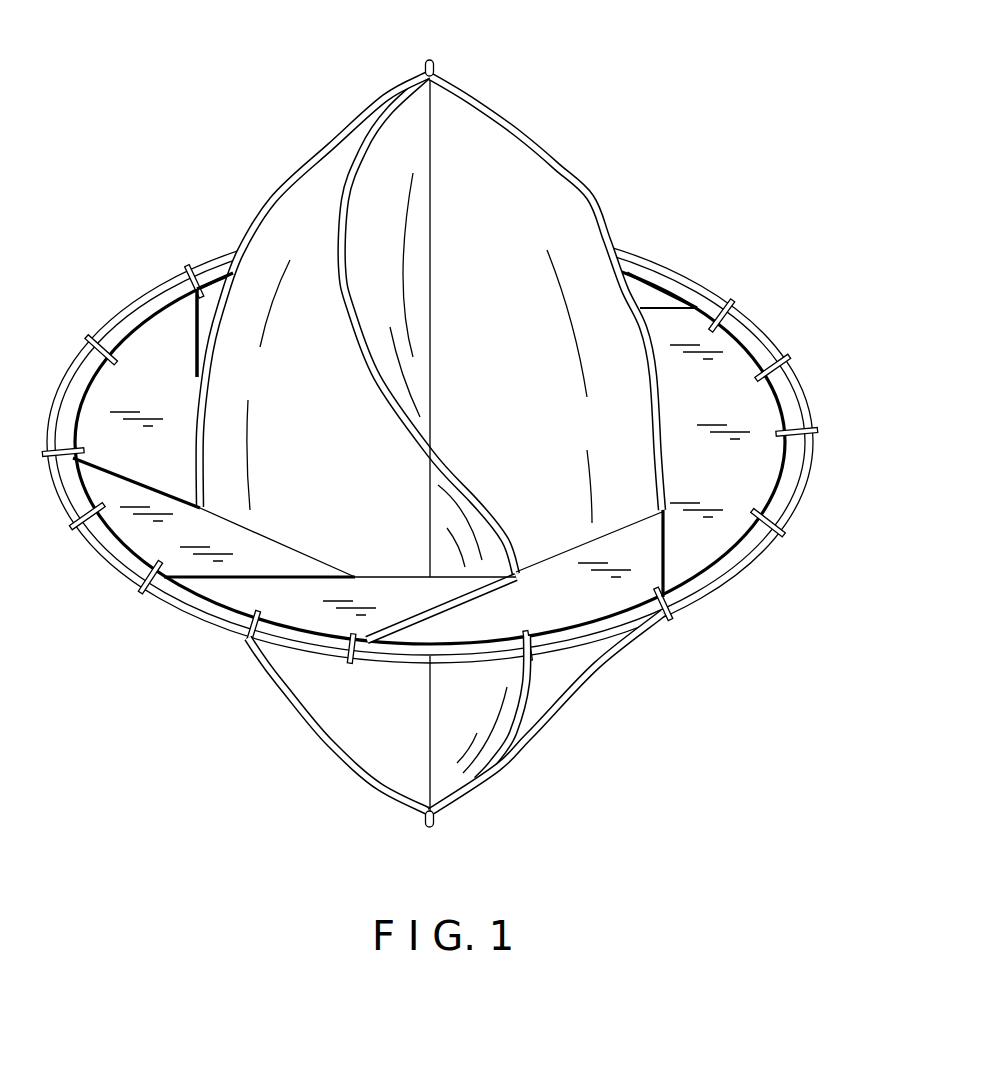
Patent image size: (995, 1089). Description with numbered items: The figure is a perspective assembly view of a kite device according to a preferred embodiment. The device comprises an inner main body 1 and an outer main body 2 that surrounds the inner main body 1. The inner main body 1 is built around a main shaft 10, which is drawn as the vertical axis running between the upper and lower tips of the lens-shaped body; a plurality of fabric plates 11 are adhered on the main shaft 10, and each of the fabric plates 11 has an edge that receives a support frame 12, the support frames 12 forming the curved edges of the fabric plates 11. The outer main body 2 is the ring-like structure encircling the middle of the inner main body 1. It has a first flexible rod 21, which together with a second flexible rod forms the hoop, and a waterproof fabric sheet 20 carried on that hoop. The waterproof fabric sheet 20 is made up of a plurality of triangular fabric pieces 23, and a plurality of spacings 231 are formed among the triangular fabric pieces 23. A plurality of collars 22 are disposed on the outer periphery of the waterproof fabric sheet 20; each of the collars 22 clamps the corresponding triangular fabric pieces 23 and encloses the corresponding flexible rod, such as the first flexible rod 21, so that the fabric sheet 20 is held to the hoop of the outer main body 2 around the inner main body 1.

The inner main body 1 is at (591, 198).
The outer main body 2 is at (818, 388).
The main shaft 10 is at (433, 60).
The fabric plates 11 is at (515, 195).
The support frame 12 is at (302, 172).
The waterproof fabric sheet 20 is at (720, 357).
The first flexible rod 21 is at (730, 580).
The collars 22 is at (653, 617).
The triangular fabric pieces 23 is at (192, 347).
The spacings 231 is at (240, 573).